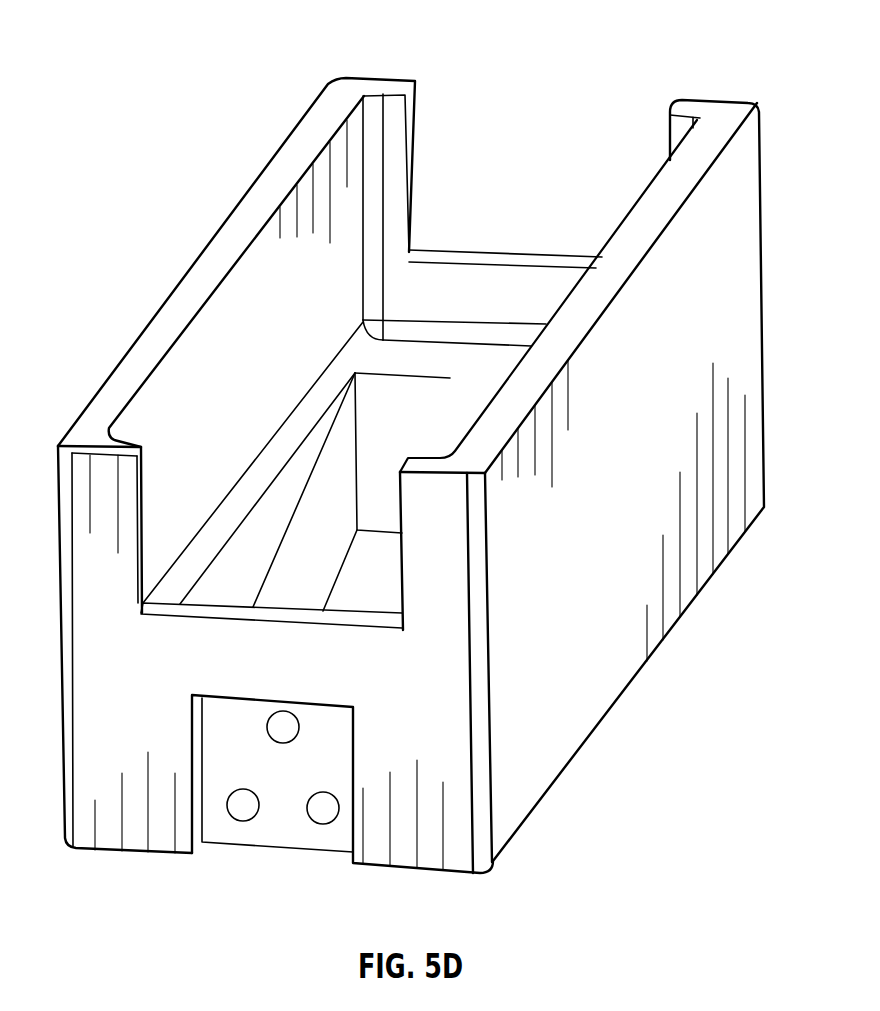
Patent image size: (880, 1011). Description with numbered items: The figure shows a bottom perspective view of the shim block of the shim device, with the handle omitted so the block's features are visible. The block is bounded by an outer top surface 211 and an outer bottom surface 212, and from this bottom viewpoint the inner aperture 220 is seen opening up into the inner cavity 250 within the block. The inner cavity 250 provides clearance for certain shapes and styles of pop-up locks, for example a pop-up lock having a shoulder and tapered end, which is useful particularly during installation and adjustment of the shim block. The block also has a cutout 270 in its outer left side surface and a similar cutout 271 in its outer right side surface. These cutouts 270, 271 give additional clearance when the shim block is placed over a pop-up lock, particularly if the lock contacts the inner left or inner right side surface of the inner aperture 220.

The outer top surface 211 is at (635, 677).
The outer bottom surface 212 is at (348, 88).
The inner aperture 220 is at (325, 492).
The inner cavity 250 is at (237, 315).
The cutout 270 is at (668, 125).
The cutout 271 is at (402, 555).